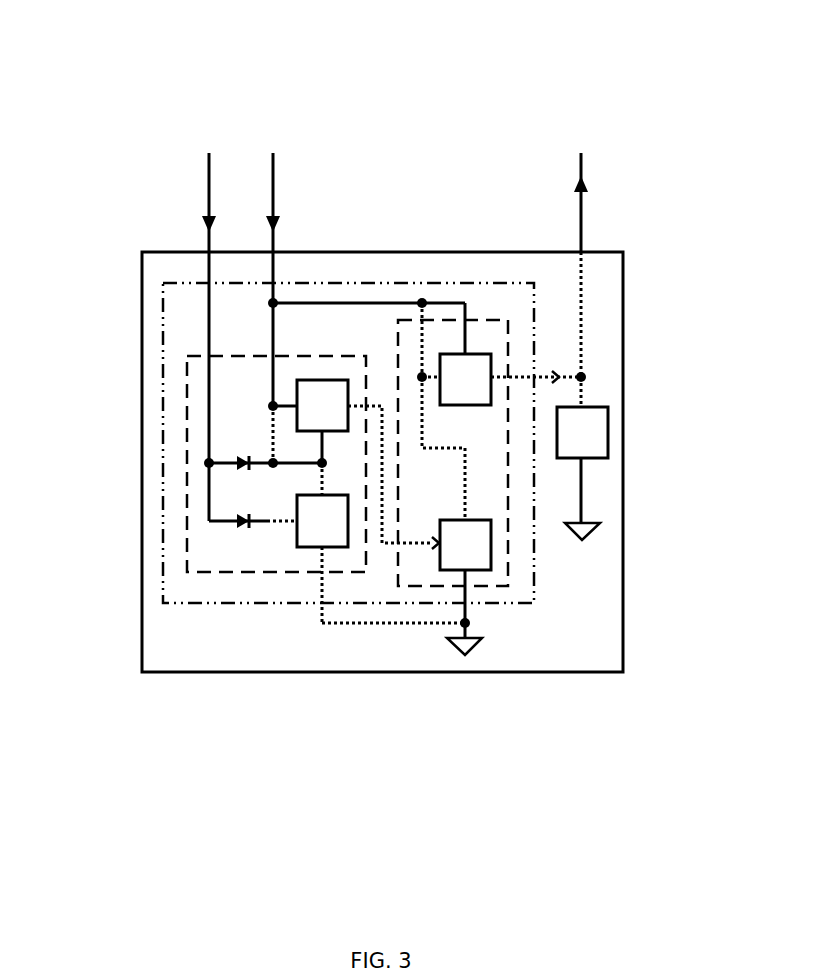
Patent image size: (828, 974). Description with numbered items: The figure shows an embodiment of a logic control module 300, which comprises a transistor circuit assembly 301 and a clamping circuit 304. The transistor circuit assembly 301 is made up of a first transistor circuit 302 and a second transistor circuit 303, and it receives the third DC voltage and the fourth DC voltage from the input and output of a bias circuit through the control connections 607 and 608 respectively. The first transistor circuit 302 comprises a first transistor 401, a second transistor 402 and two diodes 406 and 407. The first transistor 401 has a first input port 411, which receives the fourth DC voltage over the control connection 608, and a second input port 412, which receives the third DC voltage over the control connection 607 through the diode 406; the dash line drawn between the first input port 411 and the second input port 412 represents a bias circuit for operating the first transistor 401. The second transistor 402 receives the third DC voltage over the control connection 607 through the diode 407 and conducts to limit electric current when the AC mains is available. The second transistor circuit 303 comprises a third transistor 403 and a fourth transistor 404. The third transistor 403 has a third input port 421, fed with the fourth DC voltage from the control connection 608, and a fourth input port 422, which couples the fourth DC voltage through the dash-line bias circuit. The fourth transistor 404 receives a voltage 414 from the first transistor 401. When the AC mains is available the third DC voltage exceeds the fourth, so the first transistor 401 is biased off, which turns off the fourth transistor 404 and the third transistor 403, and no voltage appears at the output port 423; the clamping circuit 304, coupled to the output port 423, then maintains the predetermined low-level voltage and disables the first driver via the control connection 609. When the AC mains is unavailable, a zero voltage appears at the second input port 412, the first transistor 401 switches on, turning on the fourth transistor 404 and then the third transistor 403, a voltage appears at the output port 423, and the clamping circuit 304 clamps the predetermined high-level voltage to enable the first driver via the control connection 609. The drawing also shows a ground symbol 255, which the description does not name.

The logic control module 300 is at (446, 240).
The transistor circuit assembly 301 is at (247, 270).
The first transistor circuit 302 is at (212, 586).
The second transistor circuit 303 is at (493, 306).
The clamping circuit 304 is at (607, 460).
The first transistor 401 is at (297, 431).
The second transistor 402 is at (306, 547).
The third transistor 403 is at (475, 405).
The fourth transistor 404 is at (477, 570).
The diode 406 is at (240, 465).
The diode 407 is at (243, 522).
The first input port 411 is at (273, 406).
The second input port 412 is at (322, 465).
The voltage 414 is at (382, 403).
The third input port 421 is at (422, 303).
The fourth input port 422 is at (422, 377).
The output port 423 is at (581, 377).
The ground 255 is at (455, 648).
The control connection 607 is at (209, 153).
The control connection 608 is at (273, 153).
The control connection 609 is at (582, 153).